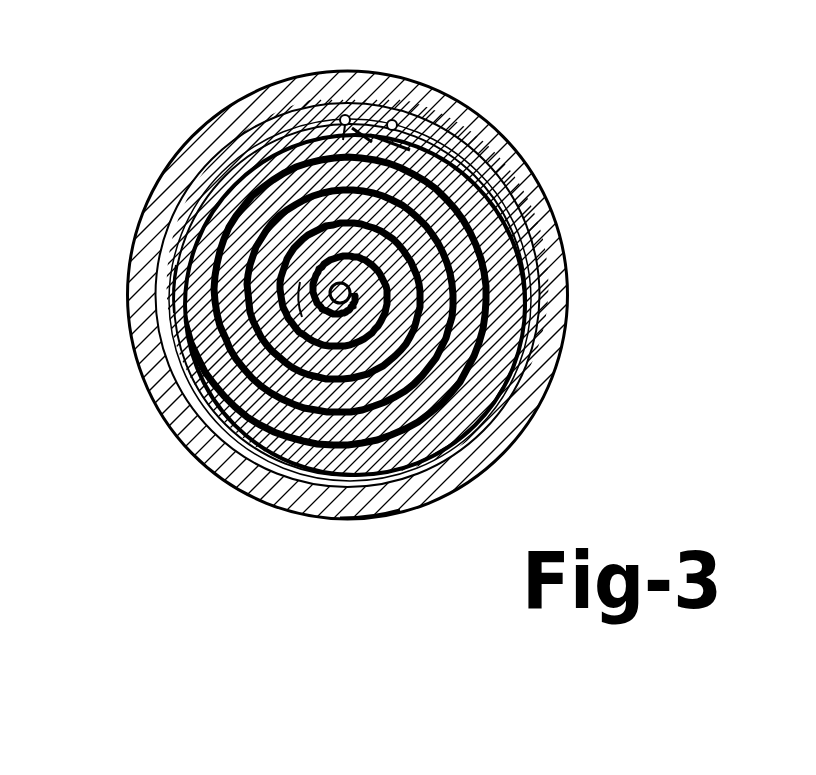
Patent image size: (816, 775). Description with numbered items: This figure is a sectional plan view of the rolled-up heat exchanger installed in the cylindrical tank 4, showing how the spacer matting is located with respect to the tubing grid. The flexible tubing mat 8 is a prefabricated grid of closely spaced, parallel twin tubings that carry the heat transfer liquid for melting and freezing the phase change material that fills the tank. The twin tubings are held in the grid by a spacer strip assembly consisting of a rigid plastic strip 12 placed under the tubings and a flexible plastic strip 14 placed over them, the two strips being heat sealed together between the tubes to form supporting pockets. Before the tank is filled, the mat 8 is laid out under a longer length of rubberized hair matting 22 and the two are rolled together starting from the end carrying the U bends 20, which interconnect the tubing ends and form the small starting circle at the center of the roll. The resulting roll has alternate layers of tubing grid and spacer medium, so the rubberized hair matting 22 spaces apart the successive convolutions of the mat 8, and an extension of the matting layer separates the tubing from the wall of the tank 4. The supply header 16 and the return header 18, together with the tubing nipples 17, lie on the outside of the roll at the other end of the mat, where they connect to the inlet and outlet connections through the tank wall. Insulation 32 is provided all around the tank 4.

The tank 4 is at (512, 195).
The flexible tubing mat 8 is at (292, 143).
The rigid plastic strip 12 is at (203, 287).
The flexible plastic strip 14 is at (302, 300).
The supply header 16 is at (397, 128).
The tubing nipples 17 is at (354, 128).
The return header 18 is at (346, 114).
The U bends 20 is at (332, 294).
The rubberized hair matting 22 is at (243, 162).
The insulation 32 is at (374, 500).